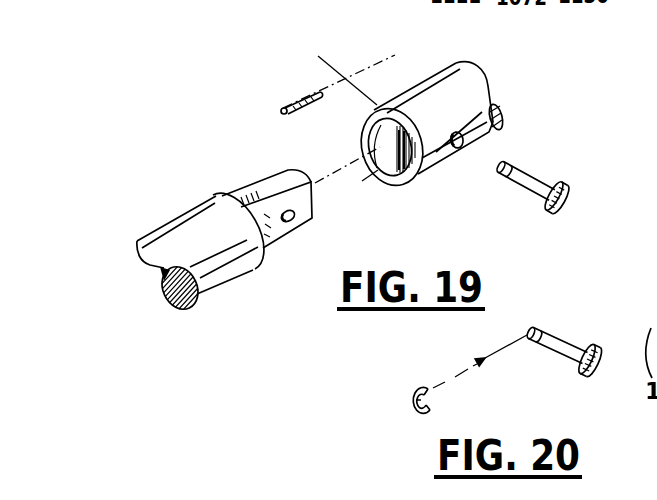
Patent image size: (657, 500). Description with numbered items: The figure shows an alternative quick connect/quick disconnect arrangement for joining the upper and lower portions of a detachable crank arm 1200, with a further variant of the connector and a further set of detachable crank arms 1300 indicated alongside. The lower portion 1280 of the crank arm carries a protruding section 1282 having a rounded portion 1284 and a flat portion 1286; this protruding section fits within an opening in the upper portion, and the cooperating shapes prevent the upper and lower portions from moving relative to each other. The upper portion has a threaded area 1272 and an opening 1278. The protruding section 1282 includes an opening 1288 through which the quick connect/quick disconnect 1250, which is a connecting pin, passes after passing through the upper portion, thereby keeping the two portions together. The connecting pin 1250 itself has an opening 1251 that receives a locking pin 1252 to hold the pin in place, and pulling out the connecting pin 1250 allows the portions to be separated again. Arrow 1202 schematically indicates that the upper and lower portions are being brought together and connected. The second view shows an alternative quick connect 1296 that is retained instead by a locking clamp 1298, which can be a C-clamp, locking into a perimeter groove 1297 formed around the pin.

In FIG. 19, the crank arm 1200 is at (117, 84).
In FIG. 19, the arrow 1202 is at (378, 203).
In FIG. 19, the quick connect/quick disconnect 1250 is at (535, 170).
In FIG. 19, the opening 1251 is at (500, 167).
In FIG. 19, the locking pin 1252 is at (297, 102).
In FIG. 19, the threaded area of upper portion of first crank arm 1272 is at (424, 172).
In FIG. 19, the opening 1278 is at (497, 112).
In FIG. 19, the lower portion of first crank arm 1280 is at (158, 227).
In FIG. 19, the protruding section 1282 is at (283, 183).
In FIG. 19, the rounded portion 1284 is at (258, 191).
In FIG. 19, the flat portion 1286 is at (300, 213).
In FIG. 19, the opening 1288 is at (288, 224).
In FIG. 20, the alternative quick connect/quick disconnect 1296 is at (567, 348).
In FIG. 20, the perimeter groove 1297 is at (568, 294).
In FIG. 20, the locking clamp 1298 is at (418, 389).
In FIG. 20, the detachable crank arms 1300 is at (205, 488).